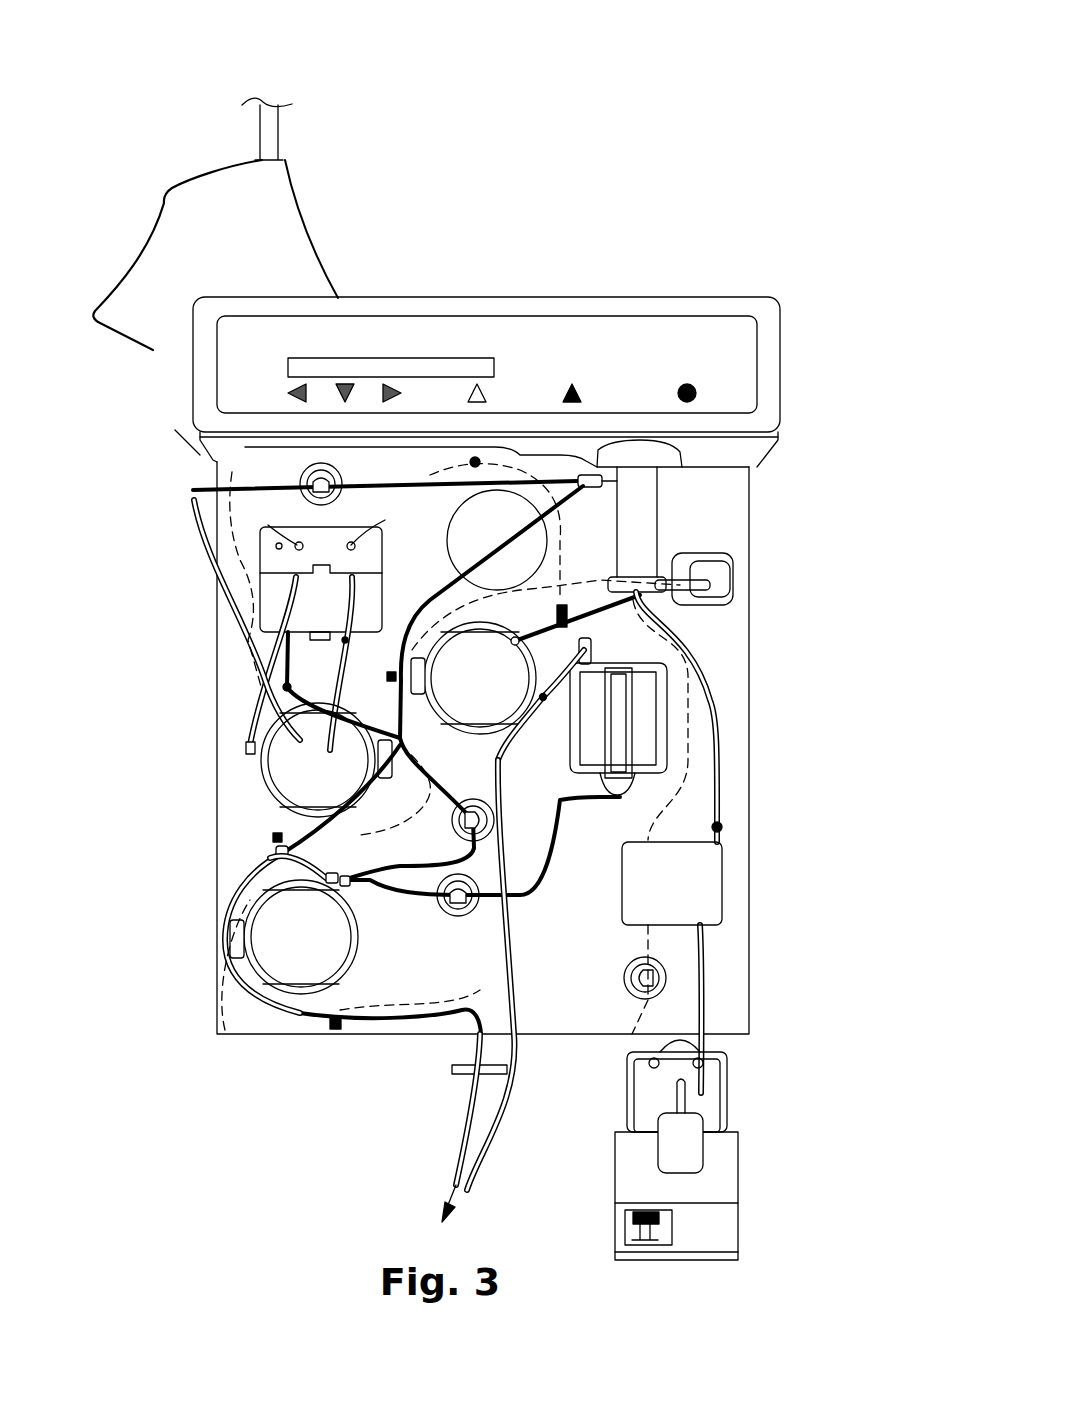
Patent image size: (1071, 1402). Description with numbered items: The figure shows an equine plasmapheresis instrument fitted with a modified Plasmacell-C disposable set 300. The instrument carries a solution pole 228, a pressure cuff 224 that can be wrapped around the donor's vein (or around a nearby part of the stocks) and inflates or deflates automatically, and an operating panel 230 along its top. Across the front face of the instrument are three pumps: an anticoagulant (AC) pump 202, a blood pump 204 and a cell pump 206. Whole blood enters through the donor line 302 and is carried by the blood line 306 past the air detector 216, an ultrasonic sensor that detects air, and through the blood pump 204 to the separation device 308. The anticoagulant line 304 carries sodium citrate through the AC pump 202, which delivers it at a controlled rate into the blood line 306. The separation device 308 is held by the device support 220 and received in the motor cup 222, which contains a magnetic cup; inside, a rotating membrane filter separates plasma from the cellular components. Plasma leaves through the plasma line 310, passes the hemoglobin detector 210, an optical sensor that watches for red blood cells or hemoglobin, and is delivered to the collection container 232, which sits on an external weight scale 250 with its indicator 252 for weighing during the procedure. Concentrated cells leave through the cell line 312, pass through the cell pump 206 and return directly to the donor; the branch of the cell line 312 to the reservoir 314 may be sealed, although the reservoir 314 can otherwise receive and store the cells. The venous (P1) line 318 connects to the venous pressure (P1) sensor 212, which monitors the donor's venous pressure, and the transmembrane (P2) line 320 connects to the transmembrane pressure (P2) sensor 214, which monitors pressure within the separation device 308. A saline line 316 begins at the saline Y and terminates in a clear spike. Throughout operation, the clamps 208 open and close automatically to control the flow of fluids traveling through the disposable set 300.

The disposable set 300 is at (163, 33).
The solution pole 228 is at (278, 135).
The pressure cuff 224 is at (298, 243).
The operating panel 230 is at (552, 336).
The clamps 208 is at (305, 478).
The saline line 316 is at (195, 490).
The venous pressure (P1) sensor 212 is at (262, 530).
The transmembrane pressure (P2) sensor 214 is at (358, 536).
The cell pump 206 is at (462, 670).
The blood line 306 is at (497, 536).
The motor cup 222 is at (657, 455).
The separation device 308 is at (645, 510).
The device support 220 is at (735, 577).
The anticoagulant line 304 is at (290, 625).
The venous (P1) line 318 is at (285, 686).
The cell line 312 is at (690, 652).
The transmembrane (P2) line 320 is at (310, 732).
The reservoir 314 is at (645, 730).
The anticoagulant (AC) pump 202 is at (290, 770).
The plasma line 310 is at (720, 786).
The hemoglobin detector 210 is at (722, 880).
The blood pump 204 is at (283, 953).
The air detector 216 is at (452, 1068).
The collection container 232 is at (670, 1147).
The external weight scale 250 is at (800, 1166).
The indicator 252 is at (632, 1227).
The donor line 302 is at (450, 1142).